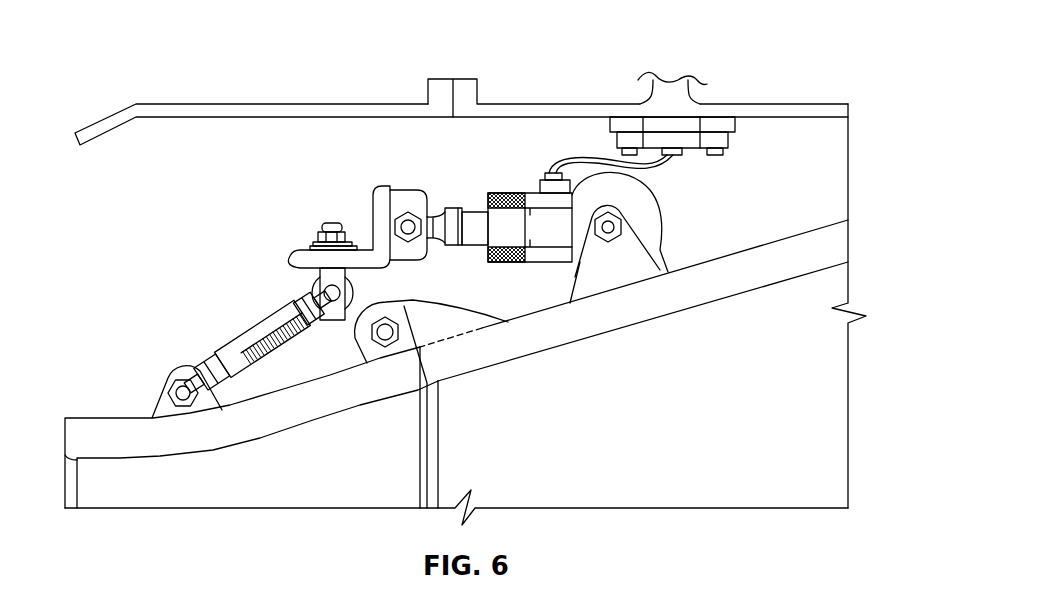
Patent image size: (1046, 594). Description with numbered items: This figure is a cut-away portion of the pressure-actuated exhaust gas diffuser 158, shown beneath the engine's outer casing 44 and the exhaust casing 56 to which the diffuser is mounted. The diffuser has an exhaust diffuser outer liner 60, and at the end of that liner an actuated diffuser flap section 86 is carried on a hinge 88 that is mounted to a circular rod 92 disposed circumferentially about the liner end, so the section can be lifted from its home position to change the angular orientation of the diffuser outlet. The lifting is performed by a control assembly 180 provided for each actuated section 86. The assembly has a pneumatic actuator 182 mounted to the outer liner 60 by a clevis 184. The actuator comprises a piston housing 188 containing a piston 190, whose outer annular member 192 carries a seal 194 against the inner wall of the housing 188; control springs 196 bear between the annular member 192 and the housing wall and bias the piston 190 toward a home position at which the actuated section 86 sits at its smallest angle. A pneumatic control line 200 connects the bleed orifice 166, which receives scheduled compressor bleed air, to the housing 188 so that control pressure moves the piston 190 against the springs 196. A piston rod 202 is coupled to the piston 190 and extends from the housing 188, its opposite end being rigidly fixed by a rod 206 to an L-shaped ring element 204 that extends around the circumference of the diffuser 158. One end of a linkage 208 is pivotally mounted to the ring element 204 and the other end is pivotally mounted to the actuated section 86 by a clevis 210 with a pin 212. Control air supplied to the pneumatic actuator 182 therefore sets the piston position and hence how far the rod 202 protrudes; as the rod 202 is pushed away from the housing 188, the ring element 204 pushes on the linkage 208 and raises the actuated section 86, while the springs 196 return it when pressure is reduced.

The outer casing 44 is at (300, 105).
The exhaust casing 56 is at (532, 105).
The exhaust gas diffuser 158 is at (608, 49).
The bleed orifice 166 is at (673, 78).
The control assembly 180 is at (252, 203).
The pneumatic actuator 182 is at (665, 229).
The clevis 184 is at (657, 253).
The piston housing 188 is at (500, 194).
The piston 190 is at (562, 237).
The outer annular member 192 is at (528, 203).
The seal 194 is at (528, 258).
The control springs 196 is at (488, 237).
The pneumatic control line 200 is at (672, 150).
The piston rod 202 is at (432, 220).
The L-shaped ring element 204 is at (378, 213).
The rod 206 is at (408, 230).
The linkage 208 is at (243, 343).
The clevis 210 is at (160, 410).
The pin 212 is at (170, 383).
The exhaust diffuser outer liner 60 is at (668, 302).
The actuated diffuser flap section 86 is at (220, 438).
The hinge 88 is at (365, 340).
The circular rod 92 is at (385, 345).